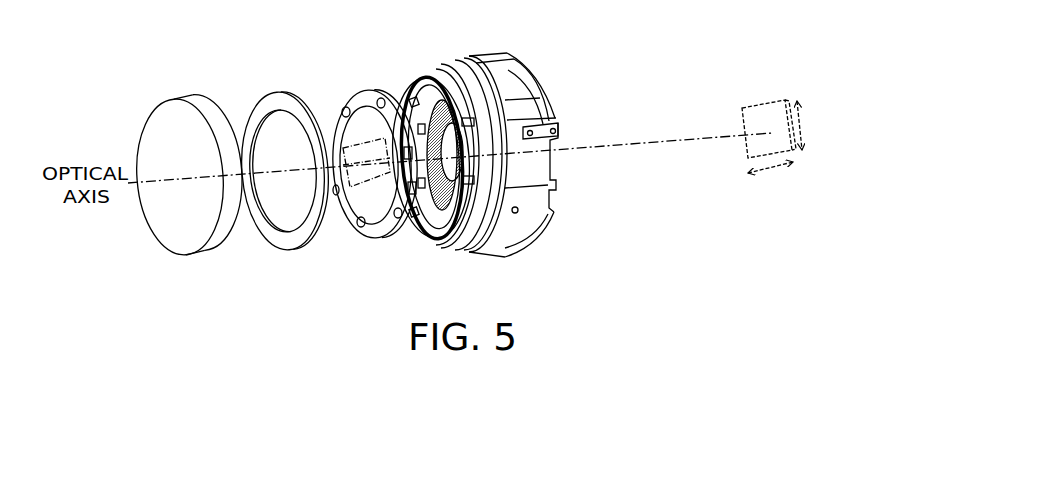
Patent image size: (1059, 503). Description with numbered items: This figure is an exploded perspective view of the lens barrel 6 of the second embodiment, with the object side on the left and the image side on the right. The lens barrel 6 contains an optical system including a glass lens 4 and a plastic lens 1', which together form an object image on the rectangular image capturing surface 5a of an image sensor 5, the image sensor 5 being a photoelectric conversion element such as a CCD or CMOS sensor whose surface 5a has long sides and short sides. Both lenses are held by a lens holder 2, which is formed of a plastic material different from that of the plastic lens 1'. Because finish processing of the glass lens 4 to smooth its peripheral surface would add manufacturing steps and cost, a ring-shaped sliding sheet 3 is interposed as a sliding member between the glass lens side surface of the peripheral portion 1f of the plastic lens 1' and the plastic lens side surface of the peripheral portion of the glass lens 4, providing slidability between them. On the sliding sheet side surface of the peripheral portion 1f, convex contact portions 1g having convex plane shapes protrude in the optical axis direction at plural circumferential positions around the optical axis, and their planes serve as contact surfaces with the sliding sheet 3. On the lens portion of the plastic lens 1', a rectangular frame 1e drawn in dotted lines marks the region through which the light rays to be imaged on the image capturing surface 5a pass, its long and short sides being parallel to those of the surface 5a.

The plastic lens 1' is at (366, 178).
The rectangular frame 1e is at (368, 183).
The peripheral portion 1f is at (380, 227).
The convex contact portion 1g is at (362, 223).
The lens holder 2 is at (440, 76).
The sliding sheet 3 is at (280, 103).
The glass lens 4 is at (185, 137).
The image sensor 5 is at (775, 100).
The rectangular image capturing surface 5a is at (755, 117).
The lens barrel 6 is at (333, 42).